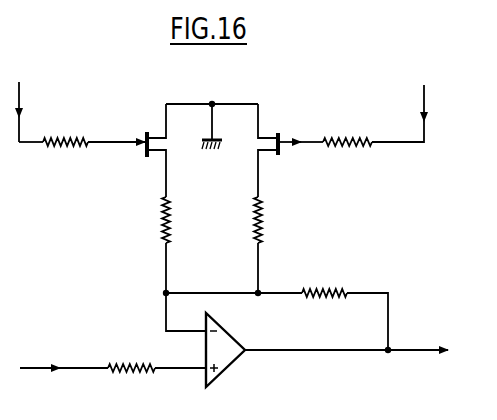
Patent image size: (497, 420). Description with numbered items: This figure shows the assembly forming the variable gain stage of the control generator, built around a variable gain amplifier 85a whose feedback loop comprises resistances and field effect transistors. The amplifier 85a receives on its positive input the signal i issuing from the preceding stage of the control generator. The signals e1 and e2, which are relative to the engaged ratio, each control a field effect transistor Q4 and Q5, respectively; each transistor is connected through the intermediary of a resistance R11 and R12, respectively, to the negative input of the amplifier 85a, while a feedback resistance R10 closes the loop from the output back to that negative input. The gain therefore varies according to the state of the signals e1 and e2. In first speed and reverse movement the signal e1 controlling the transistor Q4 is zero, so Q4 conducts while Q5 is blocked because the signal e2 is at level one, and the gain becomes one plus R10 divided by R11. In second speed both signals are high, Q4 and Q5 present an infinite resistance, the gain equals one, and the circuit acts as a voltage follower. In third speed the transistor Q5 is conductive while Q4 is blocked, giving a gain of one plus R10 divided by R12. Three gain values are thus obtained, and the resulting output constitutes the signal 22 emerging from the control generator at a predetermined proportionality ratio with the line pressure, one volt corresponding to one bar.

The signal e1 is at (80, 114).
The signal e2 is at (438, 91).
The field effect transistor Q4 is at (149, 150).
The field effect transistor Q5 is at (274, 150).
The resistance R11 is at (181, 245).
The resistance R12 is at (273, 245).
The feedback resistance R10 is at (345, 310).
The variable gain amplifier 85a is at (222, 348).
The signal issuing from the stage 84 i is at (38, 365).
The signal emerging from the control generator 22 is at (422, 350).